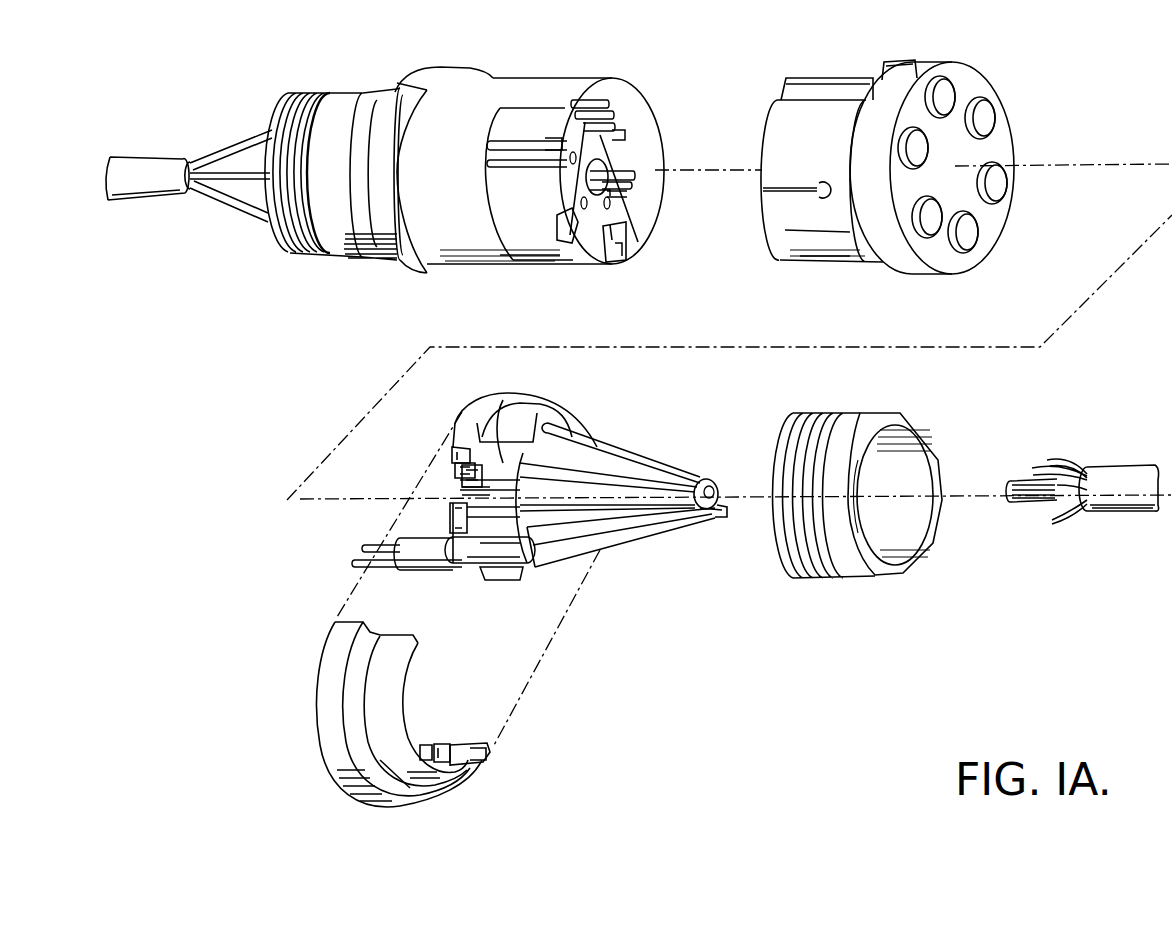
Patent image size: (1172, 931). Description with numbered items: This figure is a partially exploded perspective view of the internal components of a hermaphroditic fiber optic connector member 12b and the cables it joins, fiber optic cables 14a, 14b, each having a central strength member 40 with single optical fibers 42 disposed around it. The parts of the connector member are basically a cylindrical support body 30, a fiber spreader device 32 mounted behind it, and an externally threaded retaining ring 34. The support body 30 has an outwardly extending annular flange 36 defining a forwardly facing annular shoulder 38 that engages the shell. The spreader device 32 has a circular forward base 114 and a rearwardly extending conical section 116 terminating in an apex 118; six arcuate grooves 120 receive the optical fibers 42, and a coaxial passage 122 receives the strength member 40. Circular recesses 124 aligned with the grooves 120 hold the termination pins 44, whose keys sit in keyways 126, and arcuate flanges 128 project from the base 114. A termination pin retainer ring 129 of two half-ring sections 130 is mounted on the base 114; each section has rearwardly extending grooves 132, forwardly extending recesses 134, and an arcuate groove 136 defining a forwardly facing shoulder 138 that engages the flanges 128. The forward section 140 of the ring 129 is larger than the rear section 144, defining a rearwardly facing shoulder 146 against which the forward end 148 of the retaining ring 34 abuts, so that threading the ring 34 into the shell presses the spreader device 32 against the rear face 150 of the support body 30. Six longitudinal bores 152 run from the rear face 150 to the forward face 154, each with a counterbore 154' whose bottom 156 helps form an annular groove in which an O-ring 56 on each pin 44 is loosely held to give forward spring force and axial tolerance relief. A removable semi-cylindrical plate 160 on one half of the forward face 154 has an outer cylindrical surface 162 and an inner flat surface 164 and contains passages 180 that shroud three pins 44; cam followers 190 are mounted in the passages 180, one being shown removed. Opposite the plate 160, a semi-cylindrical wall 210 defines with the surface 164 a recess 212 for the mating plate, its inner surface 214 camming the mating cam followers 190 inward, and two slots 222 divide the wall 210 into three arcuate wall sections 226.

The connector member 12b is at (328, 275).
The fiber optic cable 14a is at (1112, 500).
The fiber optic cable 14b is at (125, 192).
The cylindrical support body 30 is at (947, 58).
The fiber spreader device 32 is at (233, 160).
The externally threaded retaining ring 34 is at (320, 90).
The annular flange 36 is at (468, 58).
The annular shoulder 38 is at (406, 273).
The central strength member 40 is at (1025, 500).
The optical fibers 42 is at (716, 517).
The termination pins 44 is at (618, 116).
The O-ring 56 is at (472, 568).
The circular forward base 114 is at (530, 414).
The conical section 116 is at (590, 458).
The apex 118 is at (710, 480).
The arcuate longitudinally extending grooves 120 is at (628, 482).
The longitudinally extending passage 122 is at (720, 497).
The circular recesses 124 is at (460, 487).
The keyways 126 is at (495, 65).
The arcuate flanges 128 is at (452, 447).
The termination pin retainer ring 129 is at (373, 91).
The half-ring sections 130 is at (327, 708).
The rearwardly extending grooves 132 is at (483, 755).
The forwardly extending recesses 134 is at (440, 750).
The arcuate groove 136 is at (423, 743).
The forwardly facing shoulder 138 is at (455, 425).
The forward section 140 is at (488, 397).
The rear section 144 is at (545, 413).
The rearwardly facing annular shoulder 146 is at (400, 790).
The forward end 148 is at (782, 430).
The rear face 150 is at (998, 228).
The longitudinal bores 152 is at (967, 115).
The forward face 154 is at (531, 277).
The counterbore 154' is at (1024, 110).
The bottoms of the counterbores 156 is at (978, 186).
The semi-cylindrical plate 160 is at (625, 240).
The outer cylindrical surface 162 is at (573, 258).
The inner flat surface 164 is at (636, 222).
The longitudinally extending passages 180 is at (548, 142).
The cam followers 190 is at (612, 252).
The semi-cylindrical wall 210 is at (657, 160).
The semi-cylindrical recess 212 is at (624, 138).
The inner surface 214 is at (652, 181).
The longitudinally extending slots 222 is at (830, 187).
The arcuate wall sections 226 is at (775, 222).